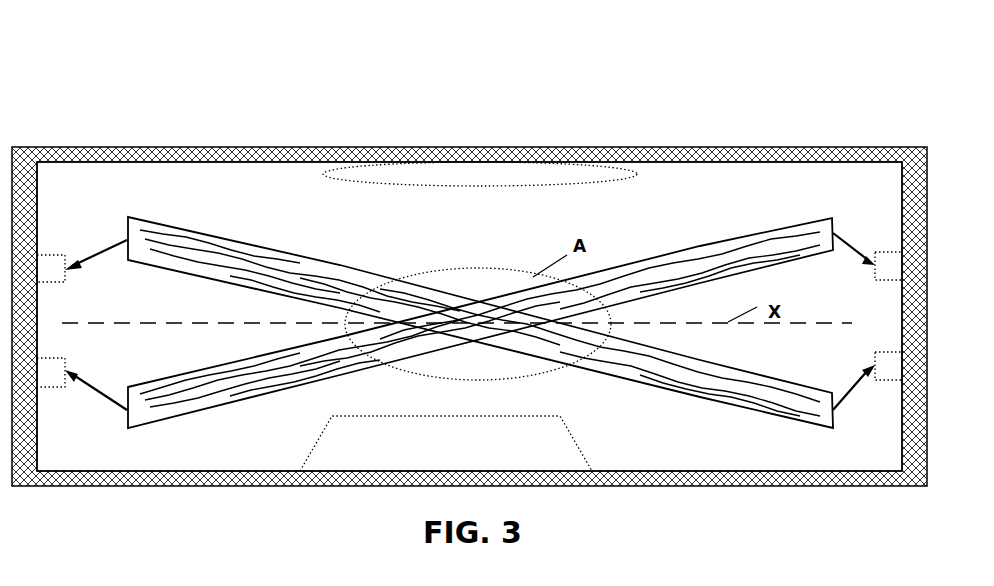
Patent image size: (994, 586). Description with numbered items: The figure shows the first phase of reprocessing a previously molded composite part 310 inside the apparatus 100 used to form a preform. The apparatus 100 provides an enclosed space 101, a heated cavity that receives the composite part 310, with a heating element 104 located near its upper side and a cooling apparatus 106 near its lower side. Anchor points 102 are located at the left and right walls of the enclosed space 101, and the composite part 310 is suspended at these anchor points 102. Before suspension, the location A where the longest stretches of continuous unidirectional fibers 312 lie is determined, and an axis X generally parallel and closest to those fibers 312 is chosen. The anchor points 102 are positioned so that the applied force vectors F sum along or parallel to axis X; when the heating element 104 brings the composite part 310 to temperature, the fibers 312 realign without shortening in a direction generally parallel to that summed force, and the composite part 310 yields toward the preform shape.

The apparatus 100 is at (676, 131).
The enclosed space 101 is at (178, 193).
The anchor points 102 is at (52, 357).
The heating element 104 is at (483, 185).
The cooling apparatus 106 is at (577, 445).
The composite part 310 is at (432, 294).
The fibers 312 is at (443, 343).